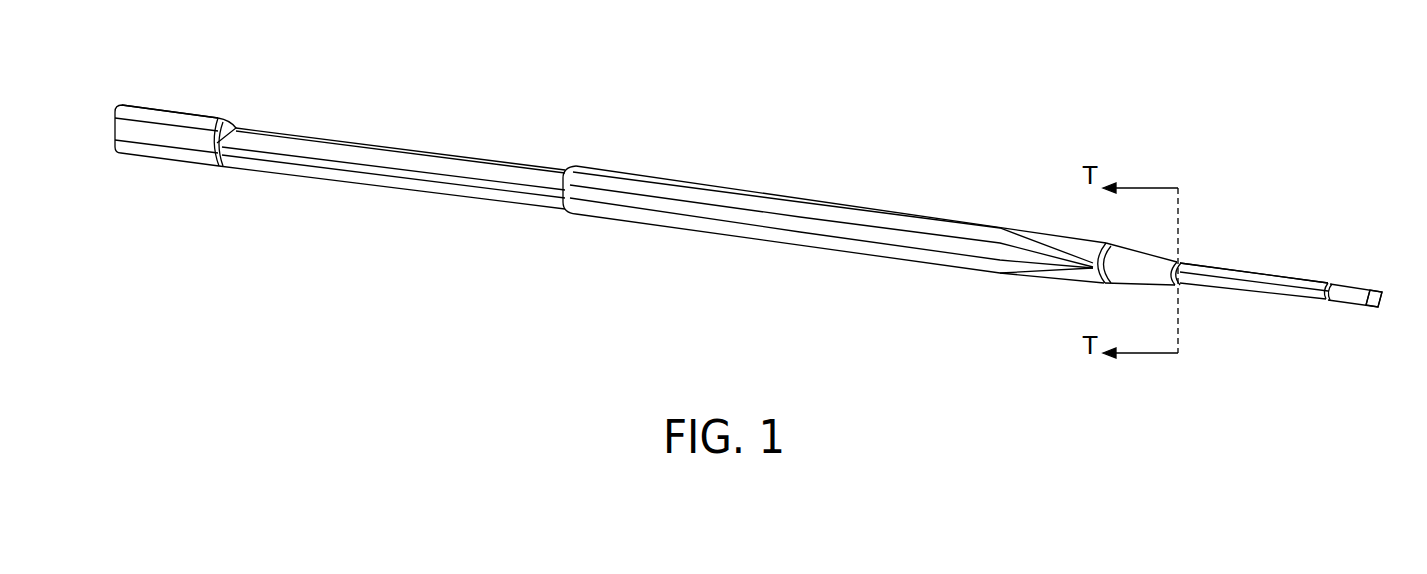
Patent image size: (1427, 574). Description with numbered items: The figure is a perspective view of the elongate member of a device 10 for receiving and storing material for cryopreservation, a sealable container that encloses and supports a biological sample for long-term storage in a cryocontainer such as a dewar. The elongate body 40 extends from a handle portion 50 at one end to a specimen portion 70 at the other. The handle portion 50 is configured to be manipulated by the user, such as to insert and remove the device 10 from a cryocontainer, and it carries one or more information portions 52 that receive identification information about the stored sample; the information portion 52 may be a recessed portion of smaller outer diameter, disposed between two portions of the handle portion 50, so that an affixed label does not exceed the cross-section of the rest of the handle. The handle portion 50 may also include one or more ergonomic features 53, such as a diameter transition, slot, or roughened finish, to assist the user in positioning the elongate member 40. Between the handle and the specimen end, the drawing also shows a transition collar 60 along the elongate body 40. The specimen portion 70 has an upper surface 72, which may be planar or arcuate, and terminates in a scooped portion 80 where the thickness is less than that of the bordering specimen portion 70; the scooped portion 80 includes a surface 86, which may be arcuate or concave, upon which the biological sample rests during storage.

The device 10 is at (1300, 130).
The elongate body 40 is at (712, 192).
The handle portion 50 is at (183, 142).
The information portion 52 is at (427, 160).
The ergonomic feature 53 is at (188, 113).
The collar 60 is at (1138, 270).
The specimen portion 70 is at (1252, 290).
The upper surface 72 is at (1303, 280).
The scooped portion 80 is at (1348, 293).
The surface 86 is at (1357, 296).